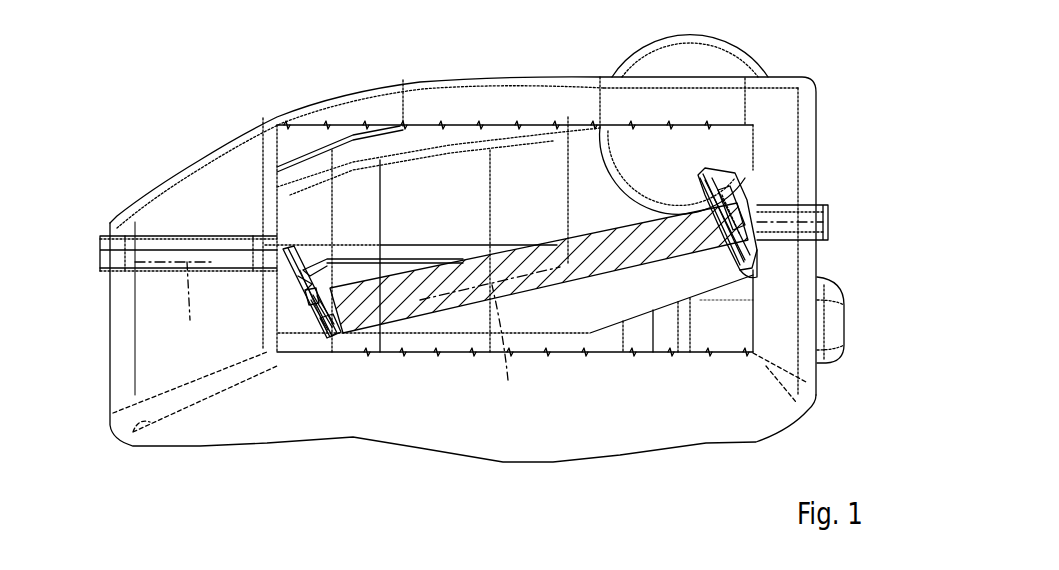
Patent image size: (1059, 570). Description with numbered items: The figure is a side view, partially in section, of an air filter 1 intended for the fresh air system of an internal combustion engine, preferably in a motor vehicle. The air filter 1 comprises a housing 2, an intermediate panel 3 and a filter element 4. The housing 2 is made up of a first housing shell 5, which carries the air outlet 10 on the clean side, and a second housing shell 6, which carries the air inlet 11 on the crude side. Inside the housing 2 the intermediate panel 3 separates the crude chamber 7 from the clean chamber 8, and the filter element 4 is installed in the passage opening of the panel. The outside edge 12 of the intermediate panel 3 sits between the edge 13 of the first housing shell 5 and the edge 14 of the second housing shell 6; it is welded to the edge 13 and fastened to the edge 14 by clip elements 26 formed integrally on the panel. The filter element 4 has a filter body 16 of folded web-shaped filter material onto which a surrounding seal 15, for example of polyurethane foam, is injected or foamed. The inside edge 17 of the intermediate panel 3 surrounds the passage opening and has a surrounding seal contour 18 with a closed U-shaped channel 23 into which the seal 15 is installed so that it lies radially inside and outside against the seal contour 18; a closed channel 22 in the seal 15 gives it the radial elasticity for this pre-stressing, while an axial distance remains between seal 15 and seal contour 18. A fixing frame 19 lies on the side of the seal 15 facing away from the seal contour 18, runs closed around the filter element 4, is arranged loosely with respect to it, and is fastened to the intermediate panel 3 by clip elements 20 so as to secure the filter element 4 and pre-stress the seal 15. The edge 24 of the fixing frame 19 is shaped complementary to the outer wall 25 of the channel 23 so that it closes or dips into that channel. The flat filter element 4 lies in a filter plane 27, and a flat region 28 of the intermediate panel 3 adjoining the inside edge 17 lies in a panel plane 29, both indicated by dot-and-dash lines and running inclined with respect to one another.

The air filter 1 is at (182, 113).
The housing 2 is at (286, 103).
The intermediate panel 3 is at (298, 251).
The filter element 4 is at (543, 236).
The first housing shell 5 is at (163, 190).
The second housing shell 6 is at (125, 373).
The crude chamber 7 is at (726, 339).
The clean chamber 8 is at (451, 211).
The air outlet 10 is at (742, 58).
The air inlet 11 is at (837, 308).
The outside edge 12 is at (105, 260).
The edge 13 is at (107, 240).
The edge 14 is at (103, 272).
The seal 15 is at (318, 278).
The filter body 16 is at (510, 262).
The inside edge 17 is at (743, 190).
The seal contour 18 is at (730, 178).
The fixing frame 19 is at (311, 326).
The clip elements 20 is at (327, 338).
The channel 22 is at (307, 298).
The channel 23 is at (733, 192).
The edge 24 is at (308, 312).
The outer wall 25 is at (303, 280).
The clip elements 26 is at (823, 188).
The filter plane 27 is at (503, 347).
The region 28 is at (234, 248).
The panel plane 29 is at (187, 305).